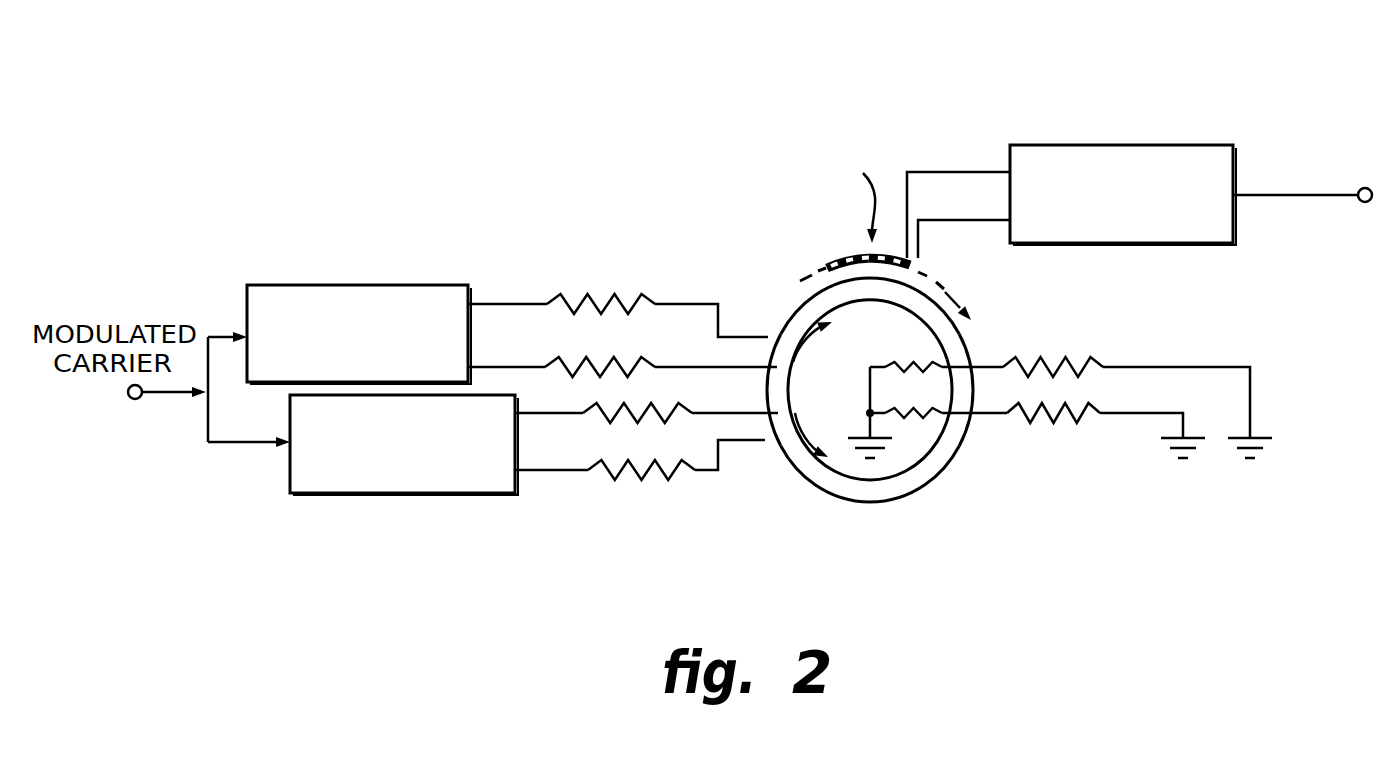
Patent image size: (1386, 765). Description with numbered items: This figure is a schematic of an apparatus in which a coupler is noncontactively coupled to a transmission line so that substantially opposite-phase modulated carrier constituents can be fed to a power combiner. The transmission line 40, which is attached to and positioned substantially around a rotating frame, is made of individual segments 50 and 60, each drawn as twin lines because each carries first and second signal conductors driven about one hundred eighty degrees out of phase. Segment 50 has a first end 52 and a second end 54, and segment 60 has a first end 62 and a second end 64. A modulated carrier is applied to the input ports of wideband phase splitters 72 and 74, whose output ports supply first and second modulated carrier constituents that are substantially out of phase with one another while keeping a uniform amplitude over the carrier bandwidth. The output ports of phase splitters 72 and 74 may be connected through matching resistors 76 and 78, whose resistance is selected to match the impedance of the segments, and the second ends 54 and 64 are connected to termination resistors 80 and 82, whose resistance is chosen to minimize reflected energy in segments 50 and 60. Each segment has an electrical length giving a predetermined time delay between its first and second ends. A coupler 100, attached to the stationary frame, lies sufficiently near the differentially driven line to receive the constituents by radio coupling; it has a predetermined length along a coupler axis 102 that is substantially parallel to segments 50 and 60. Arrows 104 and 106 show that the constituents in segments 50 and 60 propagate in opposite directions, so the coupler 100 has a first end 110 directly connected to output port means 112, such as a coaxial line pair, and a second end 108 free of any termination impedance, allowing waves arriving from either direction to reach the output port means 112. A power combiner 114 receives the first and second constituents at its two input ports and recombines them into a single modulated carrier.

The transmission line 40 is at (858, 385).
The individual segment 50 is at (795, 283).
The first end 52 is at (775, 367).
The second end 54 is at (967, 360).
The individual segment 60 is at (860, 505).
The first end 62 is at (773, 418).
The second end 64 is at (968, 414).
The wideband phase splitter 72 is at (287, 285).
The wideband phase splitter 74 is at (290, 467).
The matching resistors 76 is at (574, 303).
The matching resistors 78 is at (610, 407).
The termination resistors 80 is at (1035, 375).
The termination resistors 82 is at (927, 417).
The coupler 100 is at (863, 173).
The coupler axis 102 is at (937, 283).
The arrow 104 is at (830, 350).
The arrow 106 is at (817, 410).
The second end 108 is at (832, 257).
The first end 110 is at (903, 257).
The output port means 112 is at (920, 255).
The power combiner 114 is at (1070, 145).